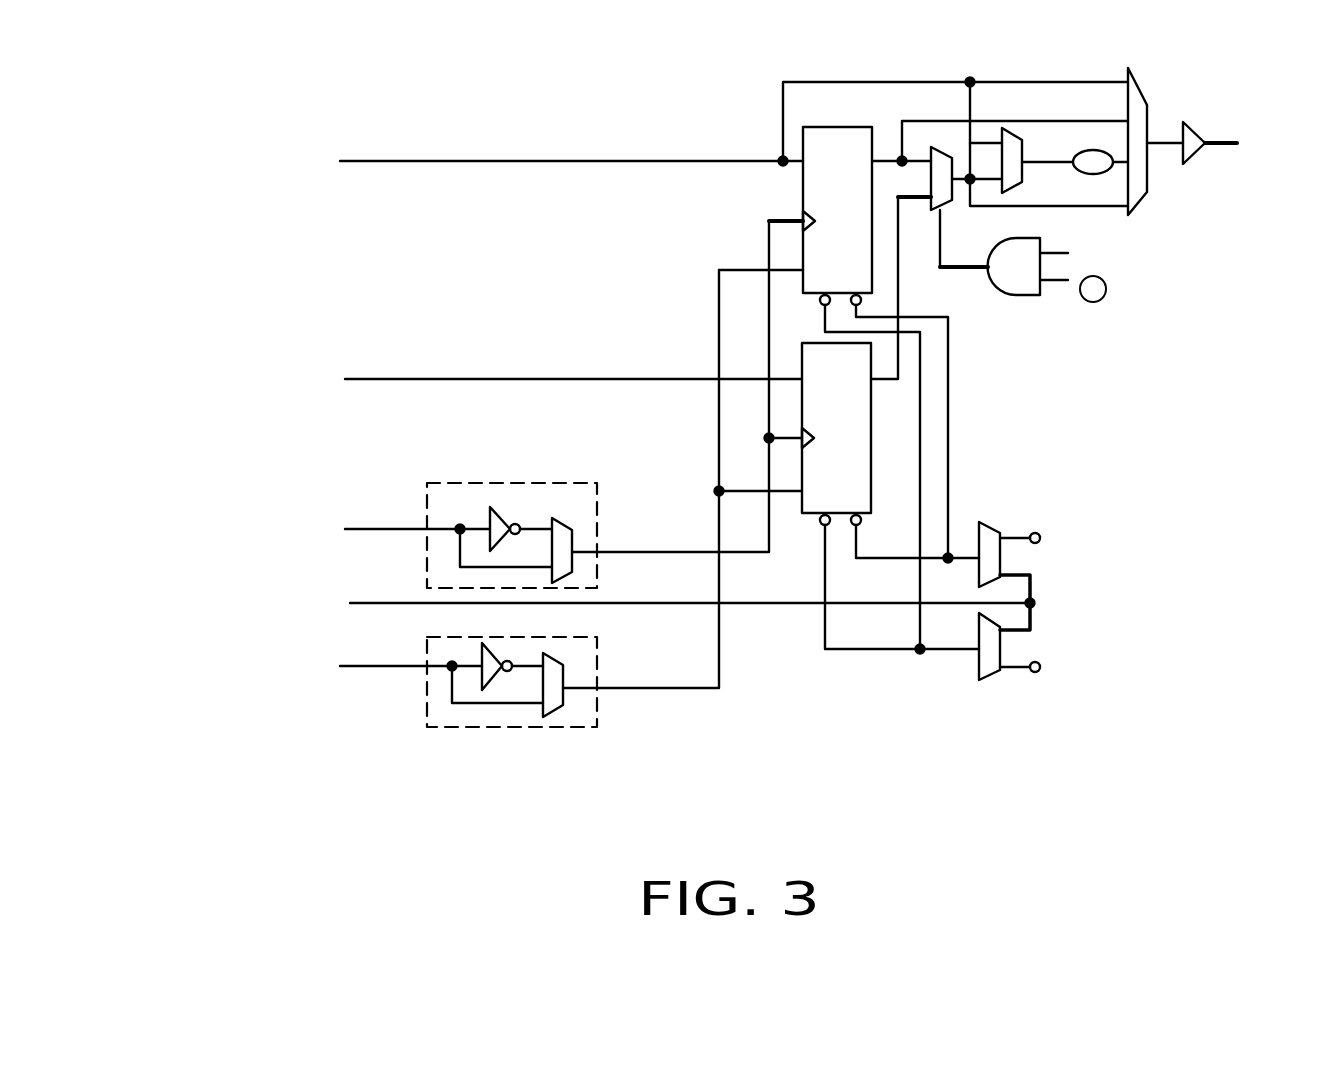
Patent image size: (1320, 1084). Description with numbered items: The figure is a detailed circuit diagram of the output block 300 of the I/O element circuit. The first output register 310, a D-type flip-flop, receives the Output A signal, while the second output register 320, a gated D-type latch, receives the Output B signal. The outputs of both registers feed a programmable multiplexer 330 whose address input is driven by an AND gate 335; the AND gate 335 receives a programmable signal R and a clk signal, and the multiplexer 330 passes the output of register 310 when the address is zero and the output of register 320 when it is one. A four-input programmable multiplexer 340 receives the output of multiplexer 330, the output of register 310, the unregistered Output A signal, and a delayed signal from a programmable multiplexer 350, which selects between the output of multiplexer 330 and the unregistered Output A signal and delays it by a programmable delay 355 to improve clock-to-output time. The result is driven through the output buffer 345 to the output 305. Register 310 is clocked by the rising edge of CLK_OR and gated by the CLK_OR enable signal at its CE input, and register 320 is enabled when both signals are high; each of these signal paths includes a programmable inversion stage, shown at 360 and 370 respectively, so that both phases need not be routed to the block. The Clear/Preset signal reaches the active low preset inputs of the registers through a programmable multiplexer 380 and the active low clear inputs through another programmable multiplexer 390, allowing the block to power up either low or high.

The output block 300 is at (360, 875).
The output 305 is at (1224, 142).
The first output register 310 is at (816, 124).
The second output register 320 is at (870, 474).
The programmable multiplexer 330 is at (950, 203).
The AND gate 335 is at (1012, 296).
The programmable multiplexer 340 is at (1130, 80).
The output buffer 345 is at (1188, 121).
The programmable multiplexer 350 is at (1010, 185).
The delay element 355 is at (1088, 150).
The programmable inversion stage 360 is at (527, 483).
The programmable inversion stage 370 is at (565, 727).
The programmable multiplexer 380 is at (985, 522).
The programmable multiplexer 390 is at (985, 681).